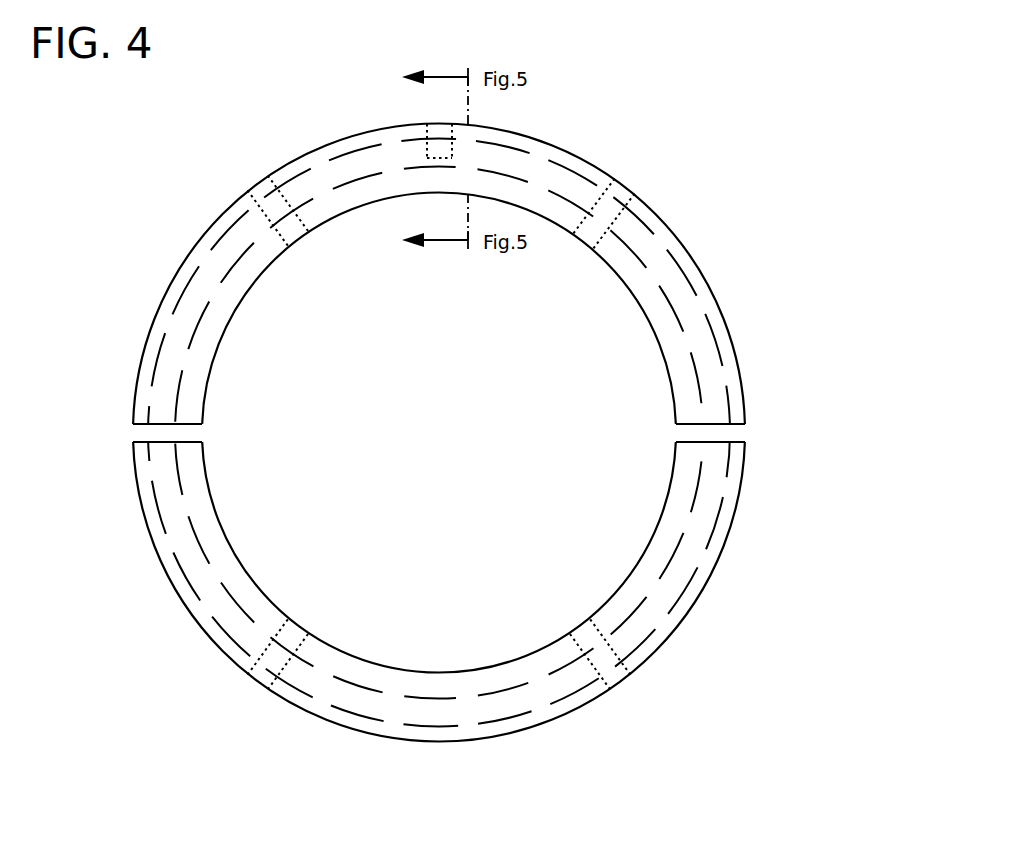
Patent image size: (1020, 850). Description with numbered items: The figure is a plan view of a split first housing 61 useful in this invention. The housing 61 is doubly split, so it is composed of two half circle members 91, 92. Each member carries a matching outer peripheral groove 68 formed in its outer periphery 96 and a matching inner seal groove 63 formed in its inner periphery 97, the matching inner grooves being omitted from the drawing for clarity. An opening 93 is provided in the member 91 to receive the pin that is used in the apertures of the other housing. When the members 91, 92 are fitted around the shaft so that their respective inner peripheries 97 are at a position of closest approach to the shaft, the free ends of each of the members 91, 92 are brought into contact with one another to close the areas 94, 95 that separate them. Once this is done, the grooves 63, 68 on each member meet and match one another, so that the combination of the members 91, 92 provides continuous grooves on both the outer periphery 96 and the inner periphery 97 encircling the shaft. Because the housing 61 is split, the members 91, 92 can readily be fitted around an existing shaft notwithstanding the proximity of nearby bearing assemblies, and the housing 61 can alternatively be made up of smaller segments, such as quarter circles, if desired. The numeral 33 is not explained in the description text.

The pin 33 is at (612, 194).
The split housing 61 is at (466, 433).
The inner seal groove 63 is at (698, 381).
The outer peripheral groove 68 is at (700, 294).
The half circle member 91 is at (740, 373).
The half circle member 92 is at (720, 545).
The opening 93 is at (450, 153).
The area 94 is at (137, 434).
The area 95 is at (737, 433).
The outer periphery 96 is at (230, 212).
The inner periphery 97 is at (281, 612).